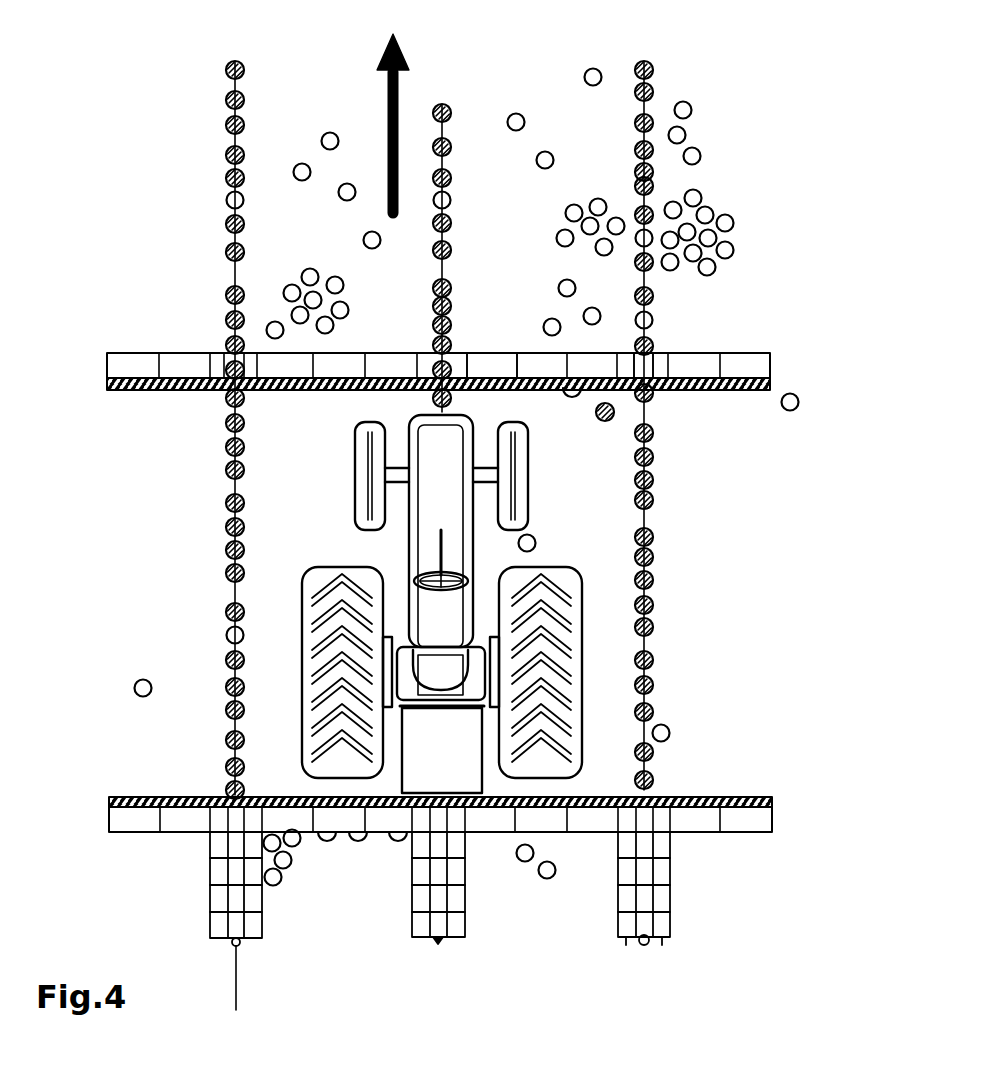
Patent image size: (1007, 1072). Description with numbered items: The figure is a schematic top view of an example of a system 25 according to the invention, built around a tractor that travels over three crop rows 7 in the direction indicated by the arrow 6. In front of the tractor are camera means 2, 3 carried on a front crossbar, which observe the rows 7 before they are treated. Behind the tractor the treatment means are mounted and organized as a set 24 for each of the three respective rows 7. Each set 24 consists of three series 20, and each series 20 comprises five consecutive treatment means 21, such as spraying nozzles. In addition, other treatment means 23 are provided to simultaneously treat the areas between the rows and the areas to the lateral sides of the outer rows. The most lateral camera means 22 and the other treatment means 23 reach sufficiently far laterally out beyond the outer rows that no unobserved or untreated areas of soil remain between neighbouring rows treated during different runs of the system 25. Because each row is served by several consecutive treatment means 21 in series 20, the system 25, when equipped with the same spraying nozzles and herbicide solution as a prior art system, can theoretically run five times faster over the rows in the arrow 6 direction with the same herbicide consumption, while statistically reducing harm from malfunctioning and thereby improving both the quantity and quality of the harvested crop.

The camera means 2 is at (657, 362).
The camera means 3 is at (478, 366).
The arrow 6 is at (386, 110).
The rows 7 is at (235, 60).
The series 20 is at (628, 942).
The treatment means 21 is at (663, 893).
The most lateral camera means 22 is at (137, 368).
The other treatment means 23 is at (130, 820).
The set 24 is at (473, 880).
The system 25 is at (745, 574).